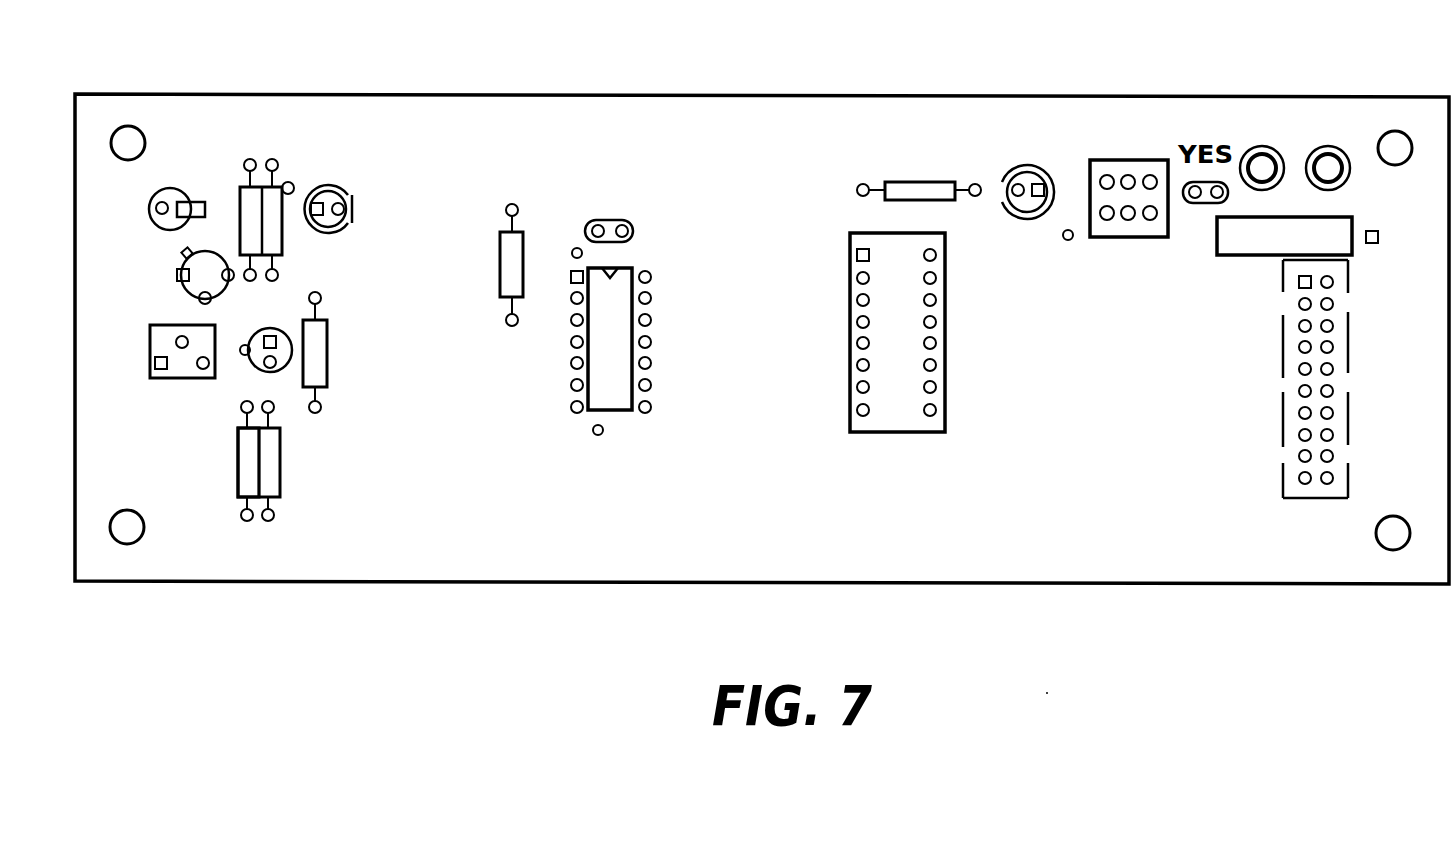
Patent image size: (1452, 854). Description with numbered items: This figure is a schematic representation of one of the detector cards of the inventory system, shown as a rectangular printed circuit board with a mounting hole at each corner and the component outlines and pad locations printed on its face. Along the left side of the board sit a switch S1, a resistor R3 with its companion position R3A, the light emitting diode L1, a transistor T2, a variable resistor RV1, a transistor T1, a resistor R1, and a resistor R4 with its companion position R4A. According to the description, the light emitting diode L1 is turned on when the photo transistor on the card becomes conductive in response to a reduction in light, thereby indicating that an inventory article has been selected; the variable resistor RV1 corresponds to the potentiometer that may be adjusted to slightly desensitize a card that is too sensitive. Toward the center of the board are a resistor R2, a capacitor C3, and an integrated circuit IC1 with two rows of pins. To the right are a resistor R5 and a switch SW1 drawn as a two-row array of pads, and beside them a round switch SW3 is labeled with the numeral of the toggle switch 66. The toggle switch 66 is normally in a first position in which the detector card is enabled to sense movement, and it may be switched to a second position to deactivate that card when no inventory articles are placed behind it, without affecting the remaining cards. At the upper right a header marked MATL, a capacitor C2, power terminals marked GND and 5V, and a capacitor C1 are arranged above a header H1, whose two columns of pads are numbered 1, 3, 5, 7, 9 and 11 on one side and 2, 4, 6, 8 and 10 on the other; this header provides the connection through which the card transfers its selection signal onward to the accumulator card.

The toggle switch 66 is at (1042, 130).
The switch S1 is at (177, 193).
The resistor R3 is at (245, 220).
The resistor R3A is at (295, 236).
The light emitting diode L1 is at (328, 192).
The transistor T2 is at (184, 275).
The variable resistor RV1 is at (182, 372).
The transistor T1 is at (258, 362).
The resistor R1 is at (314, 372).
The resistor R4 is at (274, 461).
The resistor R4A is at (230, 472).
The resistor R2 is at (508, 283).
The capacitor C3 is at (609, 213).
The integrated circuit IC1 is at (632, 337).
The resistor R5 is at (919, 174).
The switch SW1 is at (897, 317).
The switch SW3 is at (1042, 202).
The material selector header MATL is at (1125, 178).
The capacitor C2 is at (1202, 208).
The ground terminal GND is at (1264, 183).
The +5V terminal 5V is at (1331, 183).
The capacitor C1 is at (1281, 238).
The header H1 is at (1315, 396).
The header pin 1 is at (1284, 280).
The header pin 2 is at (1345, 280).
The header pin 3 is at (1284, 302).
The header pin 4 is at (1345, 302).
The header pin 5 is at (1284, 324).
The header pin 6 is at (1345, 324).
The header pin 7 is at (1284, 345).
The header pin 8 is at (1345, 345).
The header pin 9 is at (1284, 367).
The header pin 10 is at (1347, 368).
The header pin 11 is at (1295, 389).